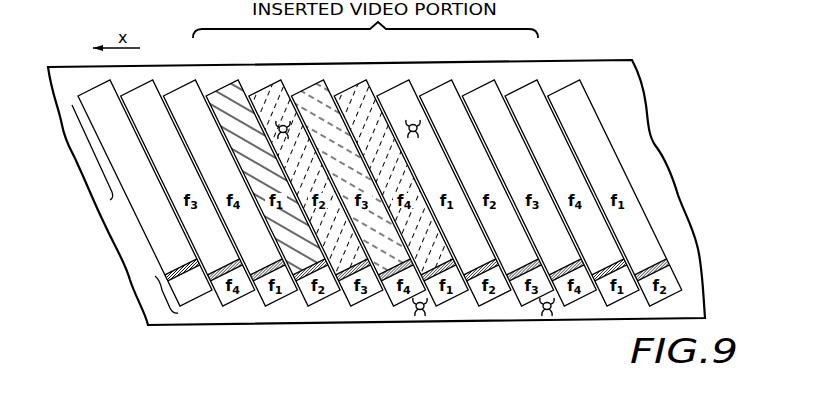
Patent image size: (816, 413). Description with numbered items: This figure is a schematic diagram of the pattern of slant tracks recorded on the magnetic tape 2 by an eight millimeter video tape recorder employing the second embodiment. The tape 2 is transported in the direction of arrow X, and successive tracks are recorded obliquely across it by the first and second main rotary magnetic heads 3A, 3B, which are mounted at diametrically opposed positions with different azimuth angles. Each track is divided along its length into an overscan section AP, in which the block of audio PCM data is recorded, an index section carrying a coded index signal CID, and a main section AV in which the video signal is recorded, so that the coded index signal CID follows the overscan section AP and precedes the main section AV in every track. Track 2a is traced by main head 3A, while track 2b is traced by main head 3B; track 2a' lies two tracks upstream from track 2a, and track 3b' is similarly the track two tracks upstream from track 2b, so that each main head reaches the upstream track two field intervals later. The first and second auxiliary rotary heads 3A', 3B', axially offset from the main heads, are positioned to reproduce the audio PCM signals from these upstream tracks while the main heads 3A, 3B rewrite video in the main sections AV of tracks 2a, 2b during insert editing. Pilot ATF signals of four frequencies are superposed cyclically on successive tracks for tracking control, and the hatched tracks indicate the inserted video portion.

The magnetic tape 2 is at (597, 73).
The track 2a is at (359, 218).
The track 2b is at (347, 245).
The track 2a' is at (444, 218).
The first main rotary magnetic head 3A is at (436, 327).
The first auxiliary rotary head 3A' is at (426, 87).
The second main rotary magnetic head 3B is at (285, 87).
The track 3b' is at (490, 218).
The second auxiliary rotary head 3B' is at (576, 327).
The main section AV is at (92, 160).
The coded index signal CID is at (173, 263).
The overscan section AP is at (157, 295).